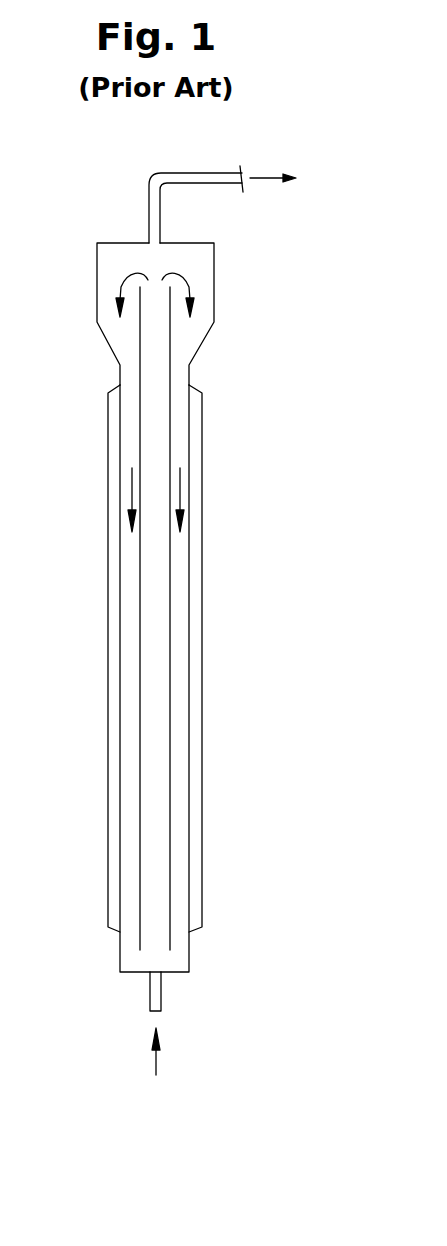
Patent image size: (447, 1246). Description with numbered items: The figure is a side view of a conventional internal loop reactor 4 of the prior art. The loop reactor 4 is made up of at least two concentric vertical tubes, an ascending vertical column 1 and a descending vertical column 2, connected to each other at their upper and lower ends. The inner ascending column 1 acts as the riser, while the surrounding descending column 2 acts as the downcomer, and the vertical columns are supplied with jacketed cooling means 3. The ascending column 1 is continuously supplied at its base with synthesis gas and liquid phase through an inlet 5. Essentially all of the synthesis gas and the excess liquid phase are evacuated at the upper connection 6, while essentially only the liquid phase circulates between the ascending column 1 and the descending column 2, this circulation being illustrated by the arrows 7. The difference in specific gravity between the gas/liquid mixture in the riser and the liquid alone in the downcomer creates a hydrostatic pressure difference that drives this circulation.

The ascending vertical column 1 is at (155, 856).
The descending vertical column 2 is at (132, 740).
The jacketed cooling means 3 is at (108, 588).
The loop reactor 4 is at (97, 276).
The inlet 5 is at (161, 995).
The upper connection 6 is at (187, 173).
The arrows 7 is at (188, 285).